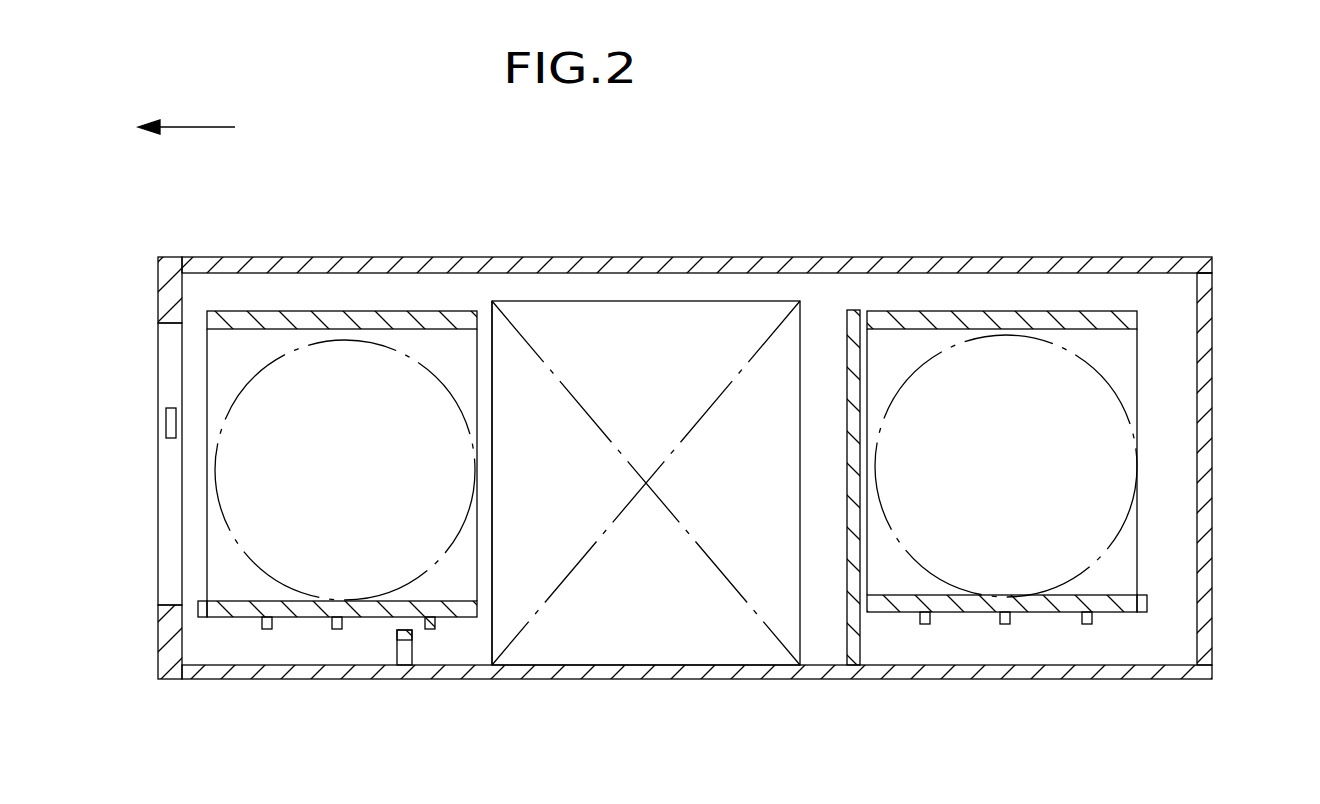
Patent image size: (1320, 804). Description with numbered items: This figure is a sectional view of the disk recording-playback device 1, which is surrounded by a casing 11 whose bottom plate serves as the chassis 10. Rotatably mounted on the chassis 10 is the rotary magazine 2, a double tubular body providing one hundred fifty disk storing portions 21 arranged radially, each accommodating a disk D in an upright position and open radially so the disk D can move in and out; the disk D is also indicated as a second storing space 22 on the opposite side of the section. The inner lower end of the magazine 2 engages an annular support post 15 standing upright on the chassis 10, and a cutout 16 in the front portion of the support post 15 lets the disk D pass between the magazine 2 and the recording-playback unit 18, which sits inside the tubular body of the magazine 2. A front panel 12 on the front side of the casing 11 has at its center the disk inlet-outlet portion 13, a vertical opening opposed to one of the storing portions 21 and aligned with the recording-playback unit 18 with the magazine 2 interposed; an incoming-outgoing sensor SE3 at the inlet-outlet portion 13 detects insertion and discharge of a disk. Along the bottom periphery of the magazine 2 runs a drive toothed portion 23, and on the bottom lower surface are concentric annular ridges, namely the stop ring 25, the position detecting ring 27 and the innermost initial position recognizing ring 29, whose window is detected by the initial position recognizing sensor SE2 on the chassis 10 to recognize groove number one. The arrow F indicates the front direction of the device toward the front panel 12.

The disk recording-playback device 1 is at (1155, 247).
The rotary magazine 2 is at (443, 303).
The chassis 10 is at (1042, 670).
The casing 11 is at (1203, 340).
The front panel 12 is at (158, 288).
The disk inlet-outlet portion 13 is at (165, 510).
The annular support post 15 is at (852, 312).
The cutout 16 is at (495, 345).
The recording-playback unit 18 is at (632, 323).
The disk storing portion 21 is at (270, 347).
The second drum compartment 22 is at (1002, 453).
The drive toothed portion 23 is at (200, 618).
The stop ring 25 is at (267, 630).
The position detecting ring 27 is at (337, 630).
The initial position recognizing ring 29 is at (432, 630).
The initial position recognizing sensor SE2 is at (407, 665).
The incoming-outgoing sensor SE3 is at (164, 428).
The disk D is at (448, 542).
The travel direction F is at (167, 128).